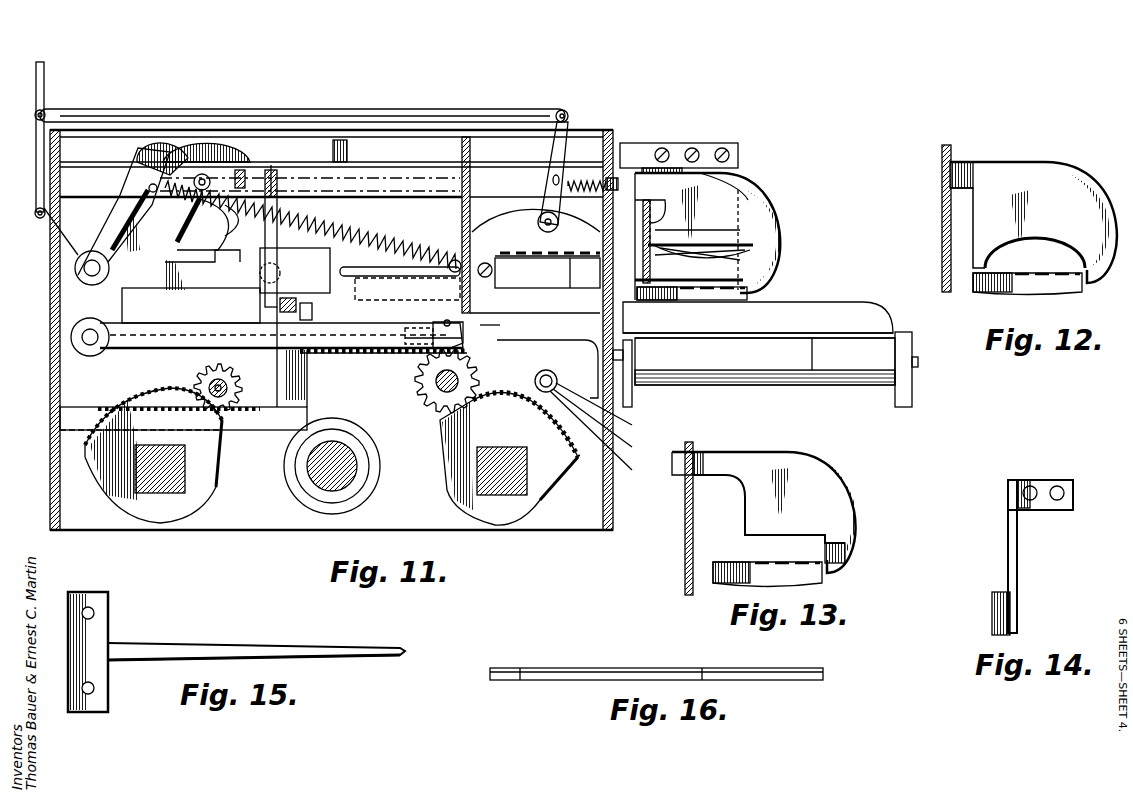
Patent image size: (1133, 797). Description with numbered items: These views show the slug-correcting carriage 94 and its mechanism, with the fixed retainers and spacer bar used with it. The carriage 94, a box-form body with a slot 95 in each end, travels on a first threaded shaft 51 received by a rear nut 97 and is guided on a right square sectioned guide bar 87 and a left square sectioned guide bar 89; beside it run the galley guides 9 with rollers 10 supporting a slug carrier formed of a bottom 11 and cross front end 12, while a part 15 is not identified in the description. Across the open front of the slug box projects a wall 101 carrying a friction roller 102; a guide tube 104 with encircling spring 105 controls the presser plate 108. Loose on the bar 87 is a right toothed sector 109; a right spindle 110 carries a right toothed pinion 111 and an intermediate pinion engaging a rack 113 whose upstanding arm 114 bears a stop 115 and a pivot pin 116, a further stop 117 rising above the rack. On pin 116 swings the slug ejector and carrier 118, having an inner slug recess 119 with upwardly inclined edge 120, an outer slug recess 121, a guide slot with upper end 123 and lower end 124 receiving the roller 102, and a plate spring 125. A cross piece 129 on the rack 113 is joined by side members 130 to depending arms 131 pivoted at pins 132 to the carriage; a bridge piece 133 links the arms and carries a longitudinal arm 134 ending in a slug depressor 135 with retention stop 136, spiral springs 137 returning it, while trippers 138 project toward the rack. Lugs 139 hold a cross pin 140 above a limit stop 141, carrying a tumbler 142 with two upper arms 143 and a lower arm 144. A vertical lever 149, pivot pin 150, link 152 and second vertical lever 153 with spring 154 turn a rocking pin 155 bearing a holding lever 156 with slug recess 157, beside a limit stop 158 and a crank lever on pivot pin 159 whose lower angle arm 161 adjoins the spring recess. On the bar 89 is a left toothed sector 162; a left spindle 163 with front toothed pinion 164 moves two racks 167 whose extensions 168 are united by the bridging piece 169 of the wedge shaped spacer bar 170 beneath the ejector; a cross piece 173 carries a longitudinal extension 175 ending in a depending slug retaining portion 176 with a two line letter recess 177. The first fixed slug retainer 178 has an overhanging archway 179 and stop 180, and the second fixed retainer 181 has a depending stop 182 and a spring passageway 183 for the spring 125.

In FIG. 11, the galley guides 9 is at (635, 340).
In FIG. 11, the rollers 10 is at (765, 361).
In FIG. 11, the bottom 11 is at (812, 340).
In FIG. 11, the cross front end 12 is at (759, 326).
In FIG. 11, the bearing 15 is at (630, 325).
In FIG. 11, the first threaded shaft 51 is at (357, 473).
In FIG. 11, the right square sectioned guide bar 87 is at (510, 478).
In FIG. 11, the left square sectioned guide bar 89 is at (152, 478).
In FIG. 11, the carriage 94 is at (52, 470).
In FIG. 12, the carriage 94 is at (952, 151).
In FIG. 13, the carriage 94 is at (693, 530).
In FIG. 11, the slot 95 is at (362, 182).
In FIG. 11, the rear nut 97 is at (290, 475).
In FIG. 11, the wall 101 is at (547, 270).
In FIG. 11, the friction roller 102 is at (520, 303).
In FIG. 11, the guide tube 104 is at (606, 435).
In FIG. 11, the spring 105 is at (609, 409).
In FIG. 11, the presser plate 108 is at (780, 196).
In FIG. 11, the right toothed sector 109 is at (509, 459).
In FIG. 11, the right spindle 110 is at (432, 385).
In FIG. 11, the right toothed pinion 111 is at (440, 398).
In FIG. 11, the rack 113 is at (345, 350).
In FIG. 11, the arm 114 is at (191, 293).
In FIG. 11, the stop 115 is at (200, 250).
In FIG. 11, the pivot pin 116 is at (262, 276).
In FIG. 11, the stop 117 is at (385, 364).
In FIG. 11, the slug ejector and carrier 118 is at (407, 293).
In FIG. 11, the inner slug recess 119 is at (356, 268).
In FIG. 11, the upwardly inclined edge 120 is at (512, 300).
In FIG. 11, the outer slug recess 121 is at (268, 313).
In FIG. 11, the upper end 123 is at (462, 250).
In FIG. 11, the lower end 124 is at (350, 268).
In FIG. 11, the plate spring 125 is at (452, 258).
In FIG. 11, the cross piece 129 is at (462, 340).
In FIG. 11, the side member 130 is at (267, 337).
In FIG. 11, the depending arm 131 is at (130, 225).
In FIG. 11, the pivot pin 132 is at (84, 270).
In FIG. 11, the bridge piece 133 is at (150, 193).
In FIG. 11, the longitudinal arm 134 is at (329, 151).
In FIG. 11, the slug depressor 135 is at (735, 182).
In FIG. 11, the retention stop 136 is at (775, 265).
In FIG. 11, the spiral spring 137 is at (243, 228).
In FIG. 11, the trippers or stops 138 is at (555, 372).
In FIG. 11, the lugs 139 is at (232, 176).
In FIG. 11, the cross pin 140 is at (200, 175).
In FIG. 11, the limit stop 141 is at (198, 212).
In FIG. 11, the tumbler 142 is at (212, 172).
In FIG. 11, the upper arms 143 is at (147, 150).
In FIG. 11, the lower arm 144 is at (185, 225).
In FIG. 11, the vertical lever 149 is at (40, 97).
In FIG. 11, the pivot pin 150 is at (40, 117).
In FIG. 11, the link 152 is at (355, 120).
In FIG. 11, the second vertical lever 153 is at (567, 138).
In FIG. 11, the spring 154 is at (586, 186).
In FIG. 11, the rocking pin 155 is at (548, 200).
In FIG. 11, the holding lever 156 is at (614, 225).
In FIG. 11, the slug recess 157 is at (645, 190).
In FIG. 11, the limit stop 158 is at (625, 195).
In FIG. 11, the pivot pin 159 is at (624, 262).
In FIG. 11, the lower angle arm 161 is at (630, 280).
In FIG. 11, the left toothed sector 162 is at (153, 455).
In FIG. 11, the left spindle 163 is at (210, 388).
In FIG. 11, the front toothed pinion 164 is at (224, 405).
In FIG. 11, the racks 167 is at (88, 412).
In FIG. 11, the upward extension 168 is at (372, 357).
In FIG. 15, the bridging piece 169 is at (100, 628).
In FIG. 11, the spacer bar 170 is at (515, 362).
In FIG. 15, the spacer bar 170 is at (226, 645).
In FIG. 16, the spacer bar 170 is at (638, 670).
In FIG. 11, the cross piece 173 is at (272, 178).
In FIG. 11, the longitudinal extension 175 is at (310, 185).
In FIG. 13, the longitudinal extension 175 is at (712, 462).
In FIG. 11, the depending slug retaining portion 176 is at (750, 208).
In FIG. 13, the depending slug retaining portion 176 is at (774, 511).
In FIG. 13, the "two line" letter recess 177 is at (838, 553).
In FIG. 11, the first fixed slug retainer 178 is at (752, 275).
In FIG. 12, the first fixed slug retainer 178 is at (1033, 222).
In FIG. 14, the first fixed slug retainer 178 is at (1008, 540).
In FIG. 11, the overhanging archway 179 is at (760, 240).
In FIG. 12, the overhanging archway 179 is at (1033, 237).
In FIG. 11, the stop 180 is at (655, 290).
In FIG. 12, the stop 180 is at (998, 283).
In FIG. 14, the stop 180 is at (1003, 587).
In FIG. 11, the second fixed retainer 181 is at (740, 250).
In FIG. 11, the depending stop 182 is at (740, 280).
In FIG. 11, the spring passageway 183 is at (690, 270).